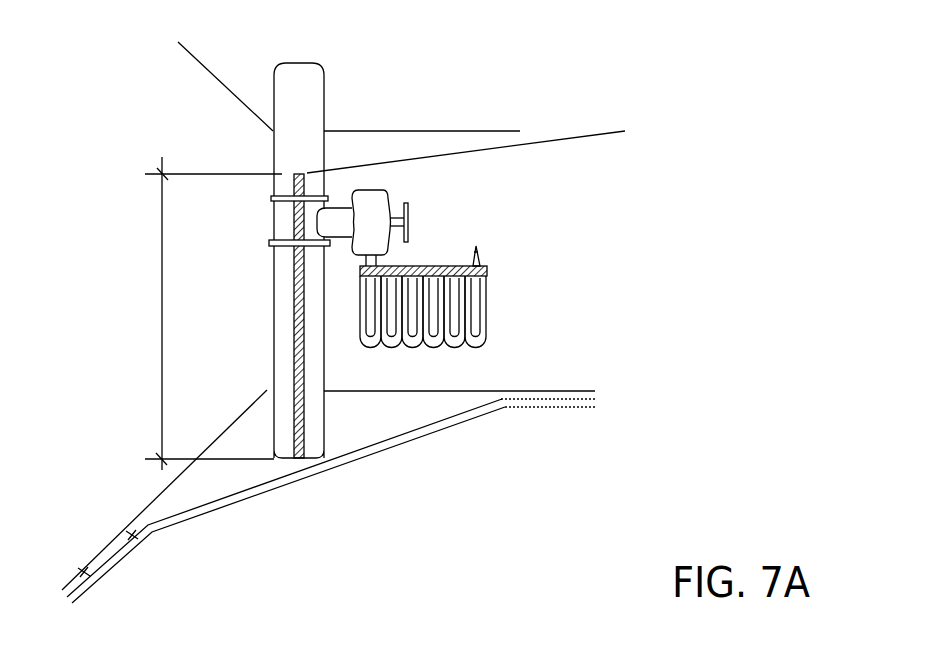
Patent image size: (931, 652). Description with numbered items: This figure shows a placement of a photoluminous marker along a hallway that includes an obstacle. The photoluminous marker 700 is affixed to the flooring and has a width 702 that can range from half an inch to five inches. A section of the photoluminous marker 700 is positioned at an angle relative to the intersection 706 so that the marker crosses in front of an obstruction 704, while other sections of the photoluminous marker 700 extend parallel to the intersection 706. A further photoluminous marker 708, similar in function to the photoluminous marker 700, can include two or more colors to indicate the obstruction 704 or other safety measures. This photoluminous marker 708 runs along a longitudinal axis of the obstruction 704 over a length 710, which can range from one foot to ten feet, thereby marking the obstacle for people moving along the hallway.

The photoluminous marker 700 is at (557, 396).
The width 702 is at (137, 537).
The obstruction 704 is at (254, 260).
The intersection 706 is at (93, 573).
The photoluminous marker 708 is at (423, 267).
The length 710 is at (161, 328).